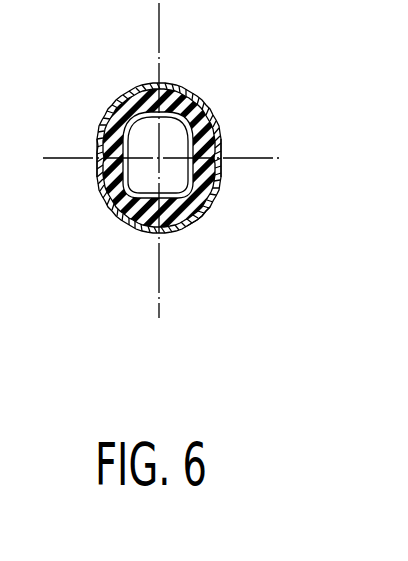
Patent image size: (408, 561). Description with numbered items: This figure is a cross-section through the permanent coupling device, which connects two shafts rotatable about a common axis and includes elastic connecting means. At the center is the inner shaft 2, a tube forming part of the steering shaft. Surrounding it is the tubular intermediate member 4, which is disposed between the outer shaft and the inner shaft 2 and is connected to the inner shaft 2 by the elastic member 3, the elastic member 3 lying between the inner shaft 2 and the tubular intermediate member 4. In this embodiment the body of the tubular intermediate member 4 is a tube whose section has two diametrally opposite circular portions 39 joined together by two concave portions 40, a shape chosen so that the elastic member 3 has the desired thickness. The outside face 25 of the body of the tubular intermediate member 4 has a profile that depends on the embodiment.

The inner shaft 2 is at (201, 97).
The elastic member 3 is at (100, 200).
The tubular intermediate member 4 is at (200, 229).
The outside face 25 is at (130, 83).
The circular portions 39 is at (175, 83).
The concave portions 40 is at (92, 145).